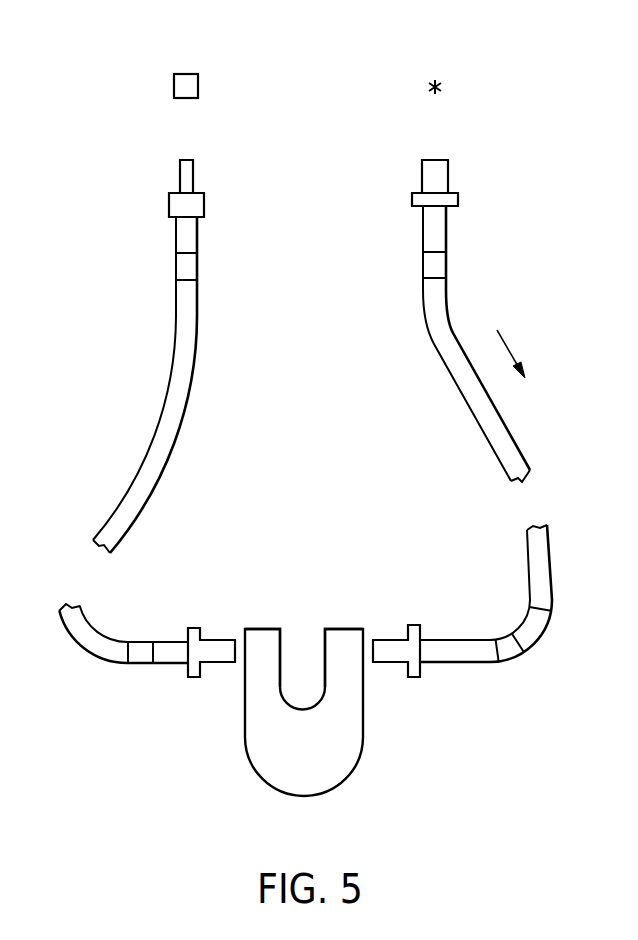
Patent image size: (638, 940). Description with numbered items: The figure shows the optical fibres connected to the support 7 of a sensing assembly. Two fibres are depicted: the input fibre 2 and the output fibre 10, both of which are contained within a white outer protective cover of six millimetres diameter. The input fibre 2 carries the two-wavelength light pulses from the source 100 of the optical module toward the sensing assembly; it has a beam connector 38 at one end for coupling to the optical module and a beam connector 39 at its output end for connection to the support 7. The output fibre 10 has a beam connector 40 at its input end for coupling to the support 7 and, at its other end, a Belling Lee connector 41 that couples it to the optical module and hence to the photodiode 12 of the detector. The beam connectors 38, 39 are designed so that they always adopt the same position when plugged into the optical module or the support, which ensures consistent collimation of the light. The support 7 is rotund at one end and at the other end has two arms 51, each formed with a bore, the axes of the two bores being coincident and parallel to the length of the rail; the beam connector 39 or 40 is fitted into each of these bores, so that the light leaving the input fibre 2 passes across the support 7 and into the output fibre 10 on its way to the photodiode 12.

The source 100 is at (437, 78).
The photodiode 12 is at (176, 84).
The output fibre 10 is at (147, 483).
The Belling Lee connector 41 is at (180, 205).
The input fibre 2 is at (508, 447).
The beam connector 38 is at (437, 187).
The beam connector 40 is at (193, 633).
The beam connector 39 is at (397, 647).
The support 7 is at (278, 768).
The arms 51 is at (268, 638).